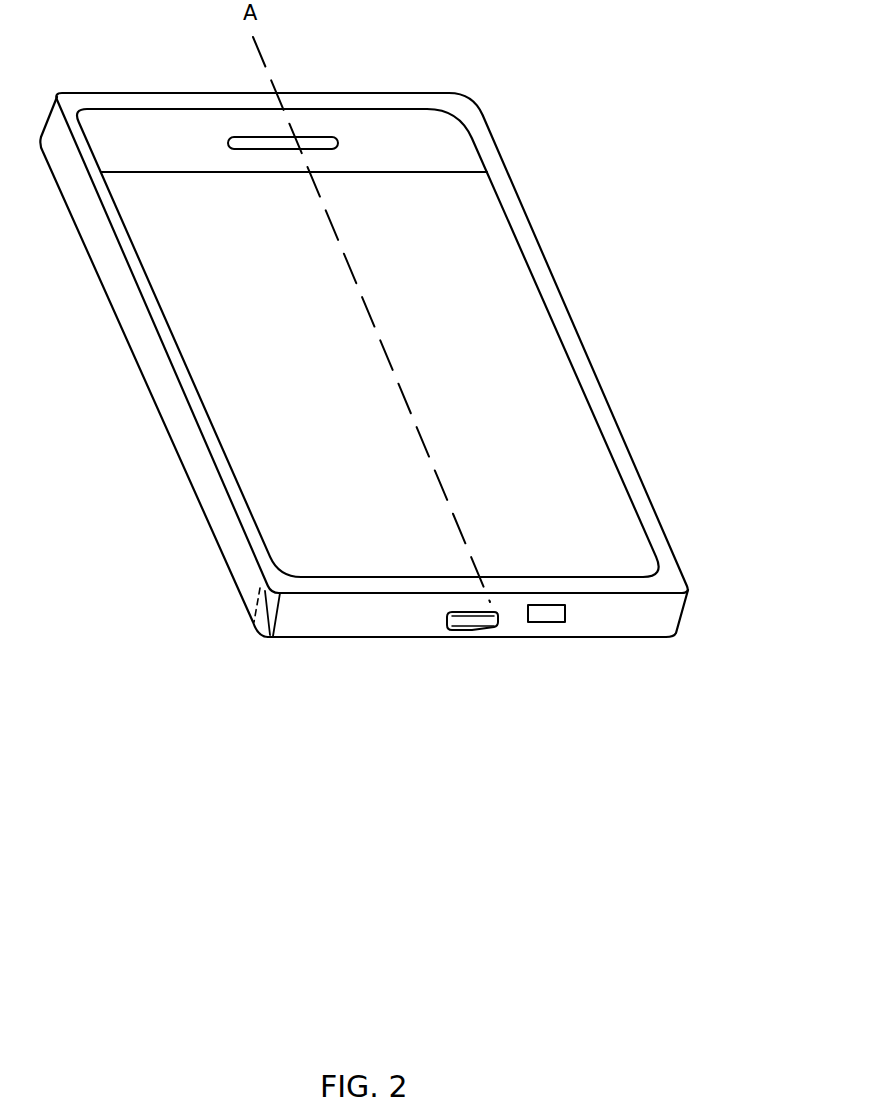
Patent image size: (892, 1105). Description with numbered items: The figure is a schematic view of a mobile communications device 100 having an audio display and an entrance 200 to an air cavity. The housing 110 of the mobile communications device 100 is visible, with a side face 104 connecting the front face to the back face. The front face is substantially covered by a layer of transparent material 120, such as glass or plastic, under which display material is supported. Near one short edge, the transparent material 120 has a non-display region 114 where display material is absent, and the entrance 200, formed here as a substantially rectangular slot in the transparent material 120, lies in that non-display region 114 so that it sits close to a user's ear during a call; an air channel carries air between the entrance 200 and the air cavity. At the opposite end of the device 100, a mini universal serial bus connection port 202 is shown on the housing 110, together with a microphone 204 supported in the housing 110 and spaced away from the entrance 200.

The mobile communications device 100 is at (634, 113).
The side face 104 is at (193, 458).
The housing 110 is at (687, 607).
The non-display region 114 is at (402, 125).
The layer of transparent material 120 is at (542, 370).
The entrance 200 is at (228, 143).
The mini universal serial bus connection port 202 is at (475, 618).
The microphone 204 is at (552, 615).